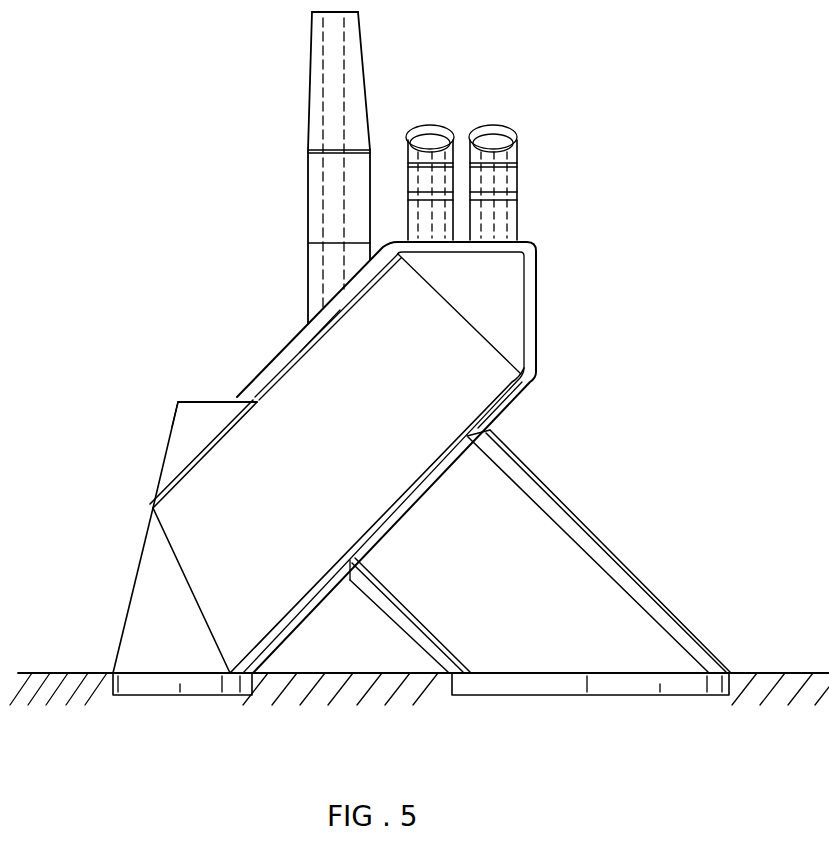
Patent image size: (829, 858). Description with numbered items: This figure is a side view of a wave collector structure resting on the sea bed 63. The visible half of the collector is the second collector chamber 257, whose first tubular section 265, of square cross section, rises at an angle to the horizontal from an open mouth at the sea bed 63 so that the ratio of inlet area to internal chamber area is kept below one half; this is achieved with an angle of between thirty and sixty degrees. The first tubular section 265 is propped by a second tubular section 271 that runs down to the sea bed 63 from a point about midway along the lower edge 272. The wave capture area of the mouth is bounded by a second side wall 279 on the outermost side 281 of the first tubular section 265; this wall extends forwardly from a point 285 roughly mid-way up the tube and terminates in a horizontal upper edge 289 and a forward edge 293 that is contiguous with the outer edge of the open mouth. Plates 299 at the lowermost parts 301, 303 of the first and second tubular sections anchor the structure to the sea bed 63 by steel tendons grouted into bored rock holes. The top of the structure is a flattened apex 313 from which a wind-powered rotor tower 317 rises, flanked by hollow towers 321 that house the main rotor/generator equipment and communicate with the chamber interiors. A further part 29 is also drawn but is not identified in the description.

The tower 317 is at (312, 33).
The hollow tower 321 is at (415, 138).
The apex 313 is at (372, 425).
The first tubular section 265 is at (485, 378).
The second collector chamber 257 is at (508, 418).
The outermost side 281 is at (317, 473).
The point 285 is at (253, 398).
The horizontal upper edge 289 is at (217, 400).
The second side wall 279 is at (190, 423).
The forward edge 293 is at (168, 448).
The support leg 29 is at (136, 593).
The lowermost part 301 is at (137, 678).
The lower edge 272 is at (302, 627).
The second tubular section 271 is at (567, 560).
The plates 299 is at (449, 637).
The lowermost part 303 is at (643, 672).
The sea bed 63 is at (58, 693).